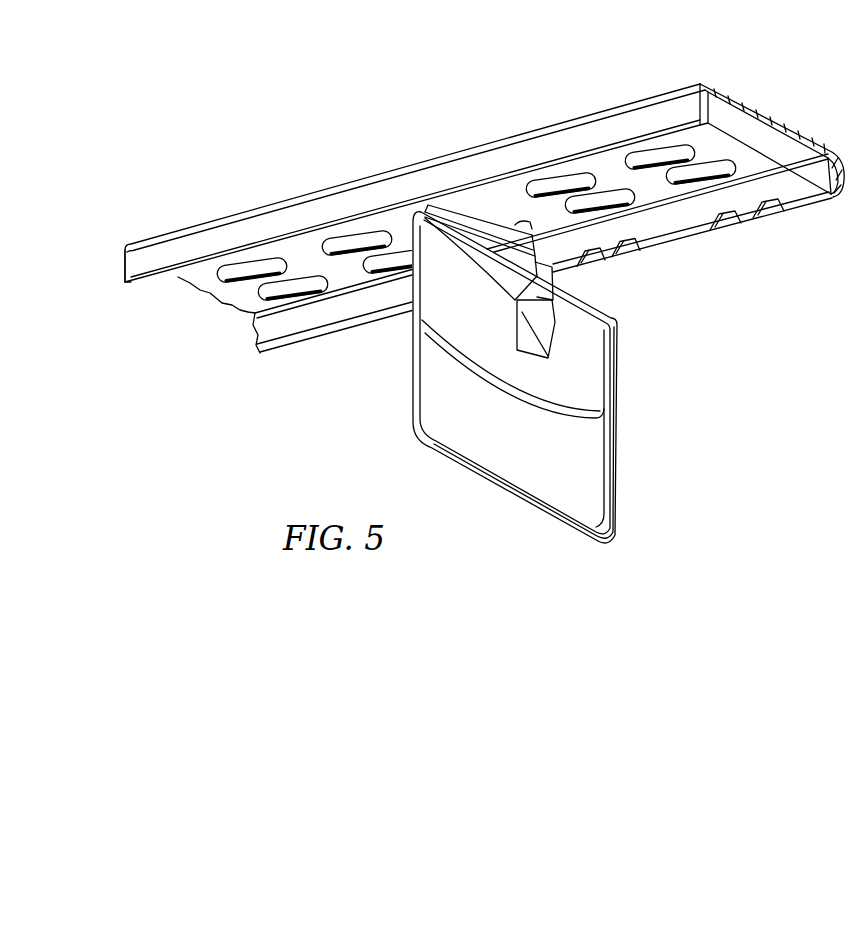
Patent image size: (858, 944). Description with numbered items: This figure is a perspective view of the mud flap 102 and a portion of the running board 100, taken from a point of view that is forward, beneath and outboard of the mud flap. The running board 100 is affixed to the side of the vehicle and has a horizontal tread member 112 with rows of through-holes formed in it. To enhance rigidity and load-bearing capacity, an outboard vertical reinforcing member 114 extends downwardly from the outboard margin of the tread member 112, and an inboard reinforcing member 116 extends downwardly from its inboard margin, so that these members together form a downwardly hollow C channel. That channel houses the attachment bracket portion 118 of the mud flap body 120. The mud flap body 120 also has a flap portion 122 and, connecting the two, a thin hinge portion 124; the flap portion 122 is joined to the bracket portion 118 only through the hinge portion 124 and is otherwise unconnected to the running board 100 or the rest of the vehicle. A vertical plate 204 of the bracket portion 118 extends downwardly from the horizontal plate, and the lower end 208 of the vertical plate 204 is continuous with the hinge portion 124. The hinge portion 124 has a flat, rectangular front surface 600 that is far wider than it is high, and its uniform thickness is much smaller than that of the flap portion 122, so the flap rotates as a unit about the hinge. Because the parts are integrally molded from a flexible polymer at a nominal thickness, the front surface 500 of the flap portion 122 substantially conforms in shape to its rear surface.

The running board 100 is at (232, 203).
The tread member 112 is at (363, 177).
The outboard vertical reinforcing member 114 is at (148, 270).
The inboard reinforcing member 116 is at (803, 188).
The bracket portion 118 is at (497, 235).
The vertical plate 204 is at (448, 208).
The lower end 208 is at (468, 210).
The front surface 600 is at (472, 250).
The hinge portion 124 is at (553, 272).
The front surface 500 is at (594, 364).
The mud flap body 120 is at (636, 486).
The flap portion 122 is at (516, 472).
The mud flap 102 is at (386, 440).